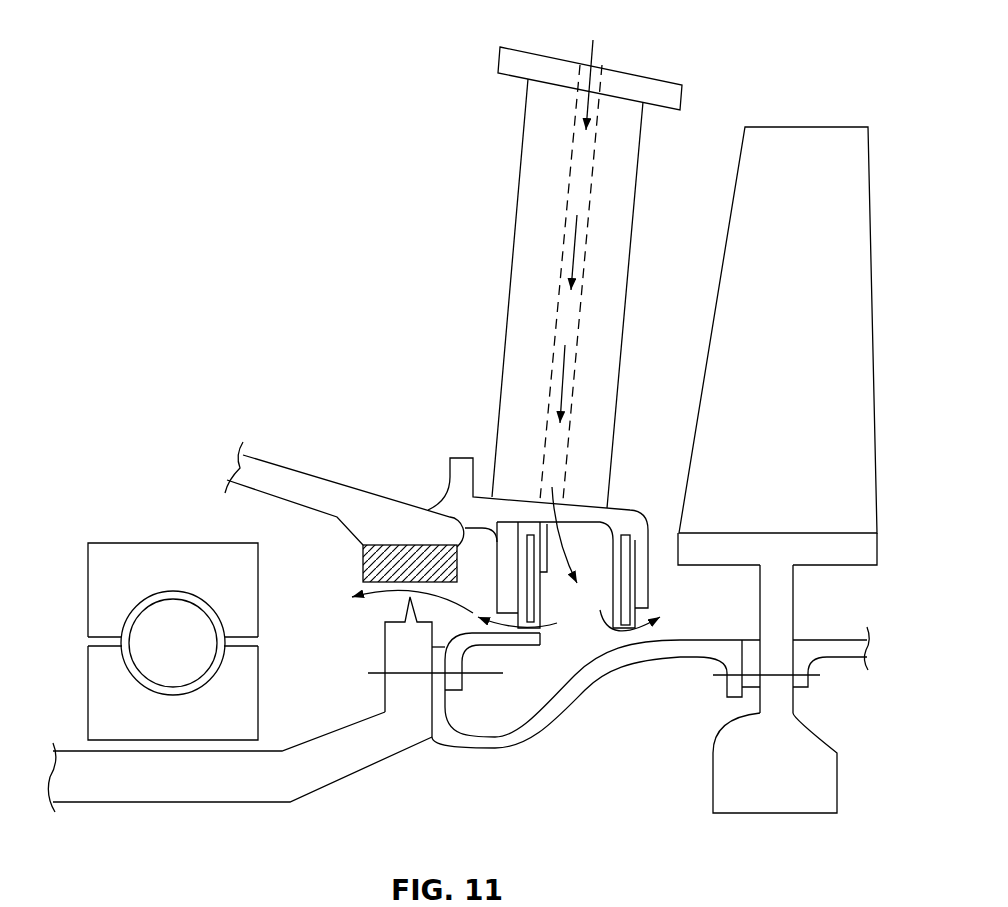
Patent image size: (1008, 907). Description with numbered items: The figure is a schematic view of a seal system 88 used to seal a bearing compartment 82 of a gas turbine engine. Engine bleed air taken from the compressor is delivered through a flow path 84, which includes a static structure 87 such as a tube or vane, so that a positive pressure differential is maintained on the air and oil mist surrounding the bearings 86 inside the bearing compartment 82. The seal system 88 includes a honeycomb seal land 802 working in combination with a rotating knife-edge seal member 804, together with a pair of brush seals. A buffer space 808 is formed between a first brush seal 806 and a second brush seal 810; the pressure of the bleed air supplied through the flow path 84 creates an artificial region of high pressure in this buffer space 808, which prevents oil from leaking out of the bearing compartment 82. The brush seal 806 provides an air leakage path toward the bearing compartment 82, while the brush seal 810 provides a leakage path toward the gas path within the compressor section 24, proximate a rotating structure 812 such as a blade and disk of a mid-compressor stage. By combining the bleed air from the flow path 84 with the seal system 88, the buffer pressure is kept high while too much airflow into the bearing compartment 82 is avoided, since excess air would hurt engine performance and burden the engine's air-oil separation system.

The compressor section 24 is at (653, 393).
The bearing compartment 82 is at (355, 668).
The flow path 84 is at (590, 48).
The bearings 86 is at (158, 655).
The static structure 87 is at (648, 77).
The seal system 88 is at (483, 698).
The honeycomb seal land 802 is at (410, 563).
The rotating knife-edge seal member 804 is at (403, 645).
The brush seal 806 is at (528, 542).
The buffer space 808 is at (581, 622).
The brush seal 810 is at (625, 542).
The rotating structure 812 is at (755, 380).